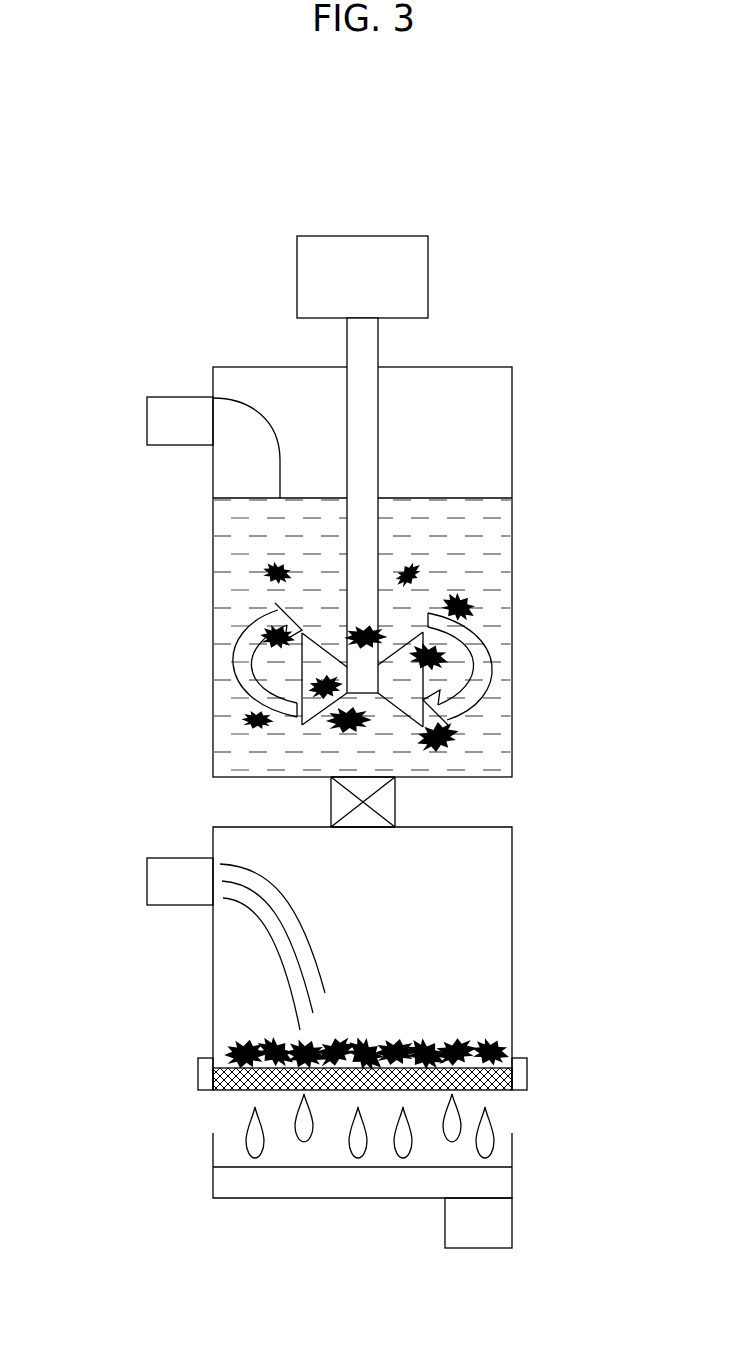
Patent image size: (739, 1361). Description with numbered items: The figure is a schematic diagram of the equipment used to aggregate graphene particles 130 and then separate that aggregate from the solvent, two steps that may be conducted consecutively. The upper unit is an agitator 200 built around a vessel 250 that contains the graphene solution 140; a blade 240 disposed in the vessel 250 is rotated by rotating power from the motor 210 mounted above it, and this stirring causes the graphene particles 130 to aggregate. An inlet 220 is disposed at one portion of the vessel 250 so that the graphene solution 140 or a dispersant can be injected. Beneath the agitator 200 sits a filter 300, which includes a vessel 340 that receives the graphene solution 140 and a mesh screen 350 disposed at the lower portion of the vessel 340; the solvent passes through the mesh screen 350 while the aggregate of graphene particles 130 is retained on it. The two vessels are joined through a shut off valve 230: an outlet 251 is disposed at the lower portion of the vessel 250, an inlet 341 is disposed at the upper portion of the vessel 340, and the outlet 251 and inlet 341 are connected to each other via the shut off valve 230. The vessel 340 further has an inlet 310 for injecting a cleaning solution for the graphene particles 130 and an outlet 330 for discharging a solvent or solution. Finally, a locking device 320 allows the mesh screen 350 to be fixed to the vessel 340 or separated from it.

The graphene particles 130 is at (265, 576).
The graphene solution 140 is at (428, 490).
The agitator 200 is at (351, 531).
The motor 210 is at (428, 278).
The inlet 220 is at (147, 425).
The shut off valve 230 is at (387, 801).
The blade 240 is at (410, 685).
The vessel 250 is at (513, 433).
The outlet 251 is at (352, 777).
The filter 300 is at (351, 1076).
The inlet 310 is at (147, 884).
The locking device 320 is at (523, 1075).
The outlet 330 is at (476, 1234).
The vessel 340 is at (513, 890).
The inlet 341 is at (372, 827).
The mesh screen 350 is at (207, 1078).